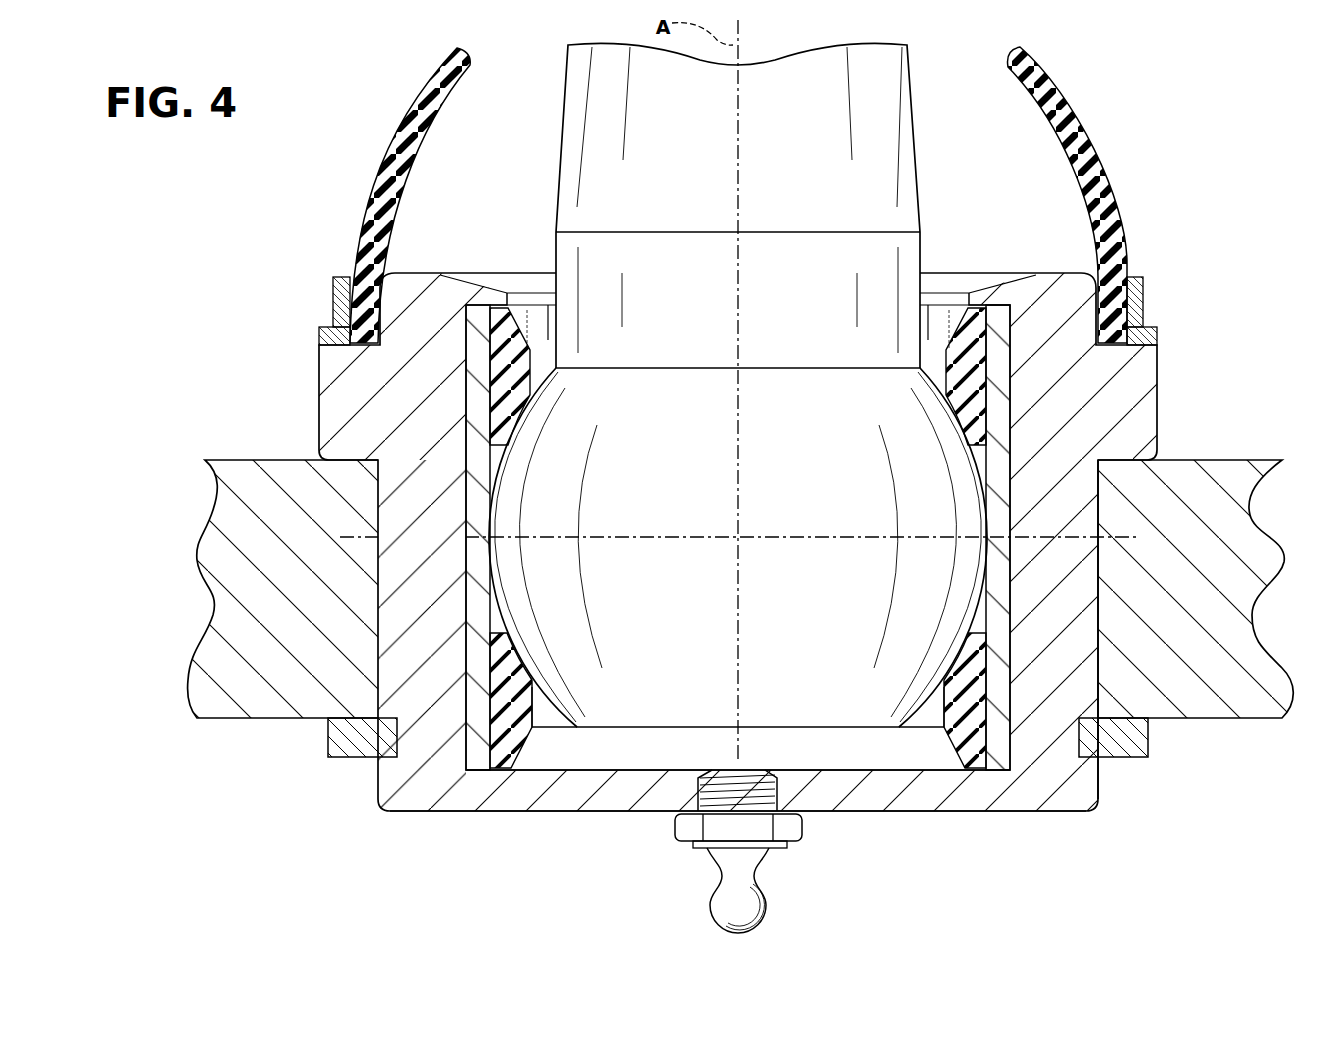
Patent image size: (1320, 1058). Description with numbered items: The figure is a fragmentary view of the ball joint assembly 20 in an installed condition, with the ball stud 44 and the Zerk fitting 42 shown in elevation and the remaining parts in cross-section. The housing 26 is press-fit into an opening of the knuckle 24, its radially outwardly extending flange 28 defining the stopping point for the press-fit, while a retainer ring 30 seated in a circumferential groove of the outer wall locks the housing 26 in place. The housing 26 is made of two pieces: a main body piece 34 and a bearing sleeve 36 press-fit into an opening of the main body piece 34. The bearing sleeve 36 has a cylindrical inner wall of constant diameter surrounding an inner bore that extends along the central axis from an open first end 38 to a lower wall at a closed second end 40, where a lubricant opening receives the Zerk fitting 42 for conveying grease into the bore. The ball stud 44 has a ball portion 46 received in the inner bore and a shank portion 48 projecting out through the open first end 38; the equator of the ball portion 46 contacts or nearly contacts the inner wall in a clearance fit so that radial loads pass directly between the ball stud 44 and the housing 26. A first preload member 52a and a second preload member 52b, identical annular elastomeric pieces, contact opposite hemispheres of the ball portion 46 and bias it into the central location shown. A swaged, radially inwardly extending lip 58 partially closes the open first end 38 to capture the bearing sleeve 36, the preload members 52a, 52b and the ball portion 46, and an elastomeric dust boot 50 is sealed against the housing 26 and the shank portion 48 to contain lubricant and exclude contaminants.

The ball joint assembly 20 is at (347, 833).
The knuckle 24 is at (1217, 510).
The housing 26 is at (502, 833).
The radially outwardly extending flange 28 is at (1127, 417).
The retainer ring 30 is at (1130, 740).
The main body piece 34 is at (410, 591).
The bearing sleeve 36 is at (477, 383).
The open first end 38 is at (933, 303).
The closed second end 40 is at (614, 765).
The Zerk fitting 42 is at (752, 897).
The ball stud 44 is at (952, 150).
The ball portion 46 is at (784, 494).
The shank portion 48 is at (784, 161).
The dust boot 50 is at (1100, 158).
The first preload member 52a is at (975, 382).
The second preload member 52b is at (977, 693).
The radially inwardly extending lip 58 is at (483, 302).